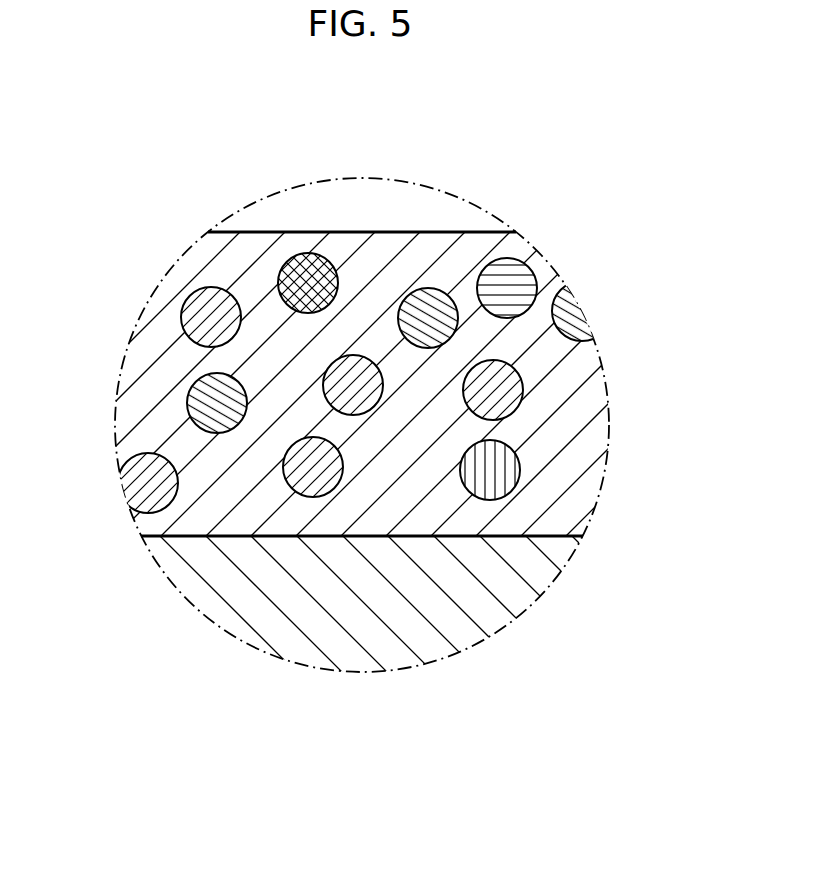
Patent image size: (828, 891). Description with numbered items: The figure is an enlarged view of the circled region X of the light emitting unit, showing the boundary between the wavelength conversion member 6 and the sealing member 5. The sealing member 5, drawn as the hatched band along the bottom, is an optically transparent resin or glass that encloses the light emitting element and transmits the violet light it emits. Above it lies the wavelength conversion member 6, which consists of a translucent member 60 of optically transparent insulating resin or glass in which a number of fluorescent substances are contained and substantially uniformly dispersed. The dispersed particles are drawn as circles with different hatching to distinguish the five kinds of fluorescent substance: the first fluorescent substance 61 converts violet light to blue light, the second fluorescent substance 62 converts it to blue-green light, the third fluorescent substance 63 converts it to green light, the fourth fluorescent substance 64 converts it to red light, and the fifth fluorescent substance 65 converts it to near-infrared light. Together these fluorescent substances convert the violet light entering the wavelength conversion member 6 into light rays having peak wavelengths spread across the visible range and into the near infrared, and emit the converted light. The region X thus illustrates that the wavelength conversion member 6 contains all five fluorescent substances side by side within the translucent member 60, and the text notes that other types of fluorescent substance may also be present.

The sealing member 5 is at (363, 623).
The wavelength conversion member 6 is at (414, 326).
The translucent member 60 is at (385, 245).
The first fluorescent substance 61 is at (213, 398).
The second fluorescent substance 62 is at (207, 313).
The third fluorescent substance 63 is at (300, 278).
The fourth fluorescent substance 64 is at (520, 280).
The fifth fluorescent substance 65 is at (495, 477).
The region X is at (460, 193).